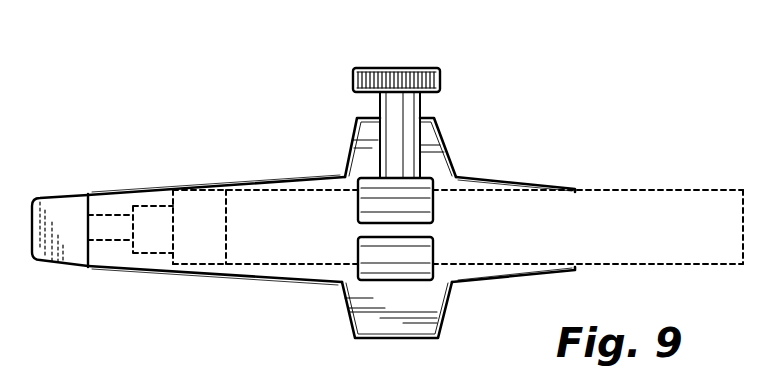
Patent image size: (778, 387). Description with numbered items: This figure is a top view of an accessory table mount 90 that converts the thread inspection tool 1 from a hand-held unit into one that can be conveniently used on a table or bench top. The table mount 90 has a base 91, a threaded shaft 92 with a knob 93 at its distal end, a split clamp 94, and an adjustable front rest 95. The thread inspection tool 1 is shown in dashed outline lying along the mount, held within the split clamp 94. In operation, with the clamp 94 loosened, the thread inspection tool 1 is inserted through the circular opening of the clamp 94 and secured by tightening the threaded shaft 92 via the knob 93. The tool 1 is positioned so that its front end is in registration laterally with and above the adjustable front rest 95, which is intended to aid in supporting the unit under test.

The thread inspection tool 1 is at (684, 187).
The accessory table mount 90 is at (524, 158).
The base 91 is at (373, 297).
The threaded shaft 92 is at (396, 126).
The knob 93 is at (438, 76).
The split clamp 94 is at (410, 253).
The adjustable front rest 95 is at (62, 217).